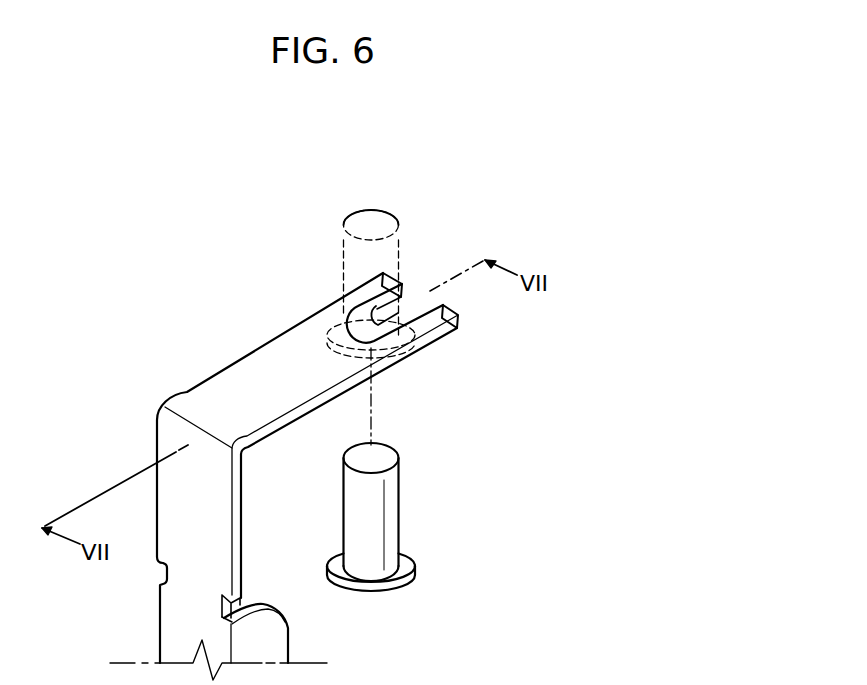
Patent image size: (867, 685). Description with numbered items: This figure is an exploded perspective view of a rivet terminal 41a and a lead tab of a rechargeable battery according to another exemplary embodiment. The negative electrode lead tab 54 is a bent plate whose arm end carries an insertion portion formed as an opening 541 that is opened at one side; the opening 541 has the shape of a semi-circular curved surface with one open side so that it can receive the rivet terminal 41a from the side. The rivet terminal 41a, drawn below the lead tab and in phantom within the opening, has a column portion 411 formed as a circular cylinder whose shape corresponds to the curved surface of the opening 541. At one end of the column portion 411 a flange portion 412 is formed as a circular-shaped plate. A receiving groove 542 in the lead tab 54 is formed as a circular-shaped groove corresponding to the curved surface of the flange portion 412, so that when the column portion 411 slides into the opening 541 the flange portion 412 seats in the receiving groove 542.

The negative electrode lead tab 54 is at (157, 430).
The opening 541 is at (376, 305).
The receiving groove 542 is at (400, 313).
The rivet terminal 41a is at (403, 474).
The column portion 411 is at (387, 513).
The flange portion 412 is at (405, 560).